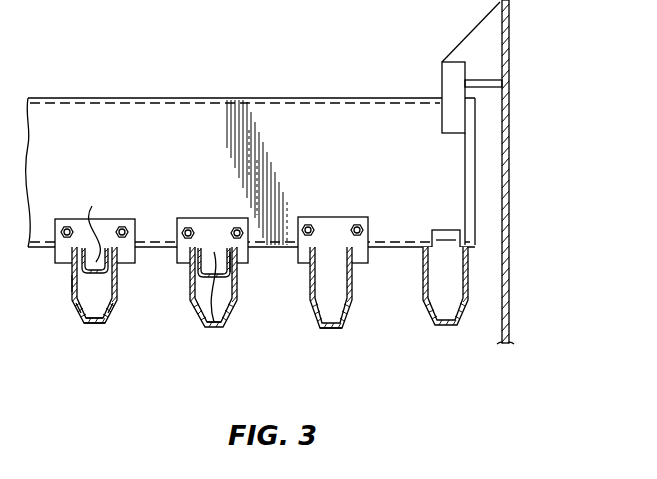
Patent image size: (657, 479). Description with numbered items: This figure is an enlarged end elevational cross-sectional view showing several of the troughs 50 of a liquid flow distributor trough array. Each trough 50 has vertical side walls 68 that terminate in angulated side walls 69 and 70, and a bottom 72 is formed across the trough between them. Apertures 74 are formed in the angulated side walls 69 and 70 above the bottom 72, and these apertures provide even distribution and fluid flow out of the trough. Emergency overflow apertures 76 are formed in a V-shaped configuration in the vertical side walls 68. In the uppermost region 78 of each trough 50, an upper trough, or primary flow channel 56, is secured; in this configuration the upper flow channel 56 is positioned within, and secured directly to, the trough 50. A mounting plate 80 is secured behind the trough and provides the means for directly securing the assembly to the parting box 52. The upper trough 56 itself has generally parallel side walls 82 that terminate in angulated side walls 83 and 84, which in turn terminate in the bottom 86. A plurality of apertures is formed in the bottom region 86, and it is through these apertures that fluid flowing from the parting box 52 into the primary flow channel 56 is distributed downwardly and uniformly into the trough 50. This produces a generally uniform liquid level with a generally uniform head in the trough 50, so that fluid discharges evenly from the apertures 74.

The trough 50 is at (66, 309).
The parting box 52 is at (316, 120).
The upper flow channel 56 is at (197, 297).
The vertical side wall 68 is at (116, 295).
The angulated side wall 69 is at (77, 313).
The angulated side wall 70 is at (114, 316).
The bottom 72 is at (101, 326).
The aperture 74 is at (88, 326).
The emergency overflow aperture 76 is at (72, 267).
The uppermost region 78 is at (73, 283).
The mounting plate 80 is at (110, 219).
The parallel side wall 82 is at (214, 250).
The angulated side wall 83 is at (193, 278).
The angulated side wall 84 is at (237, 278).
The bottom 86 is at (210, 325).